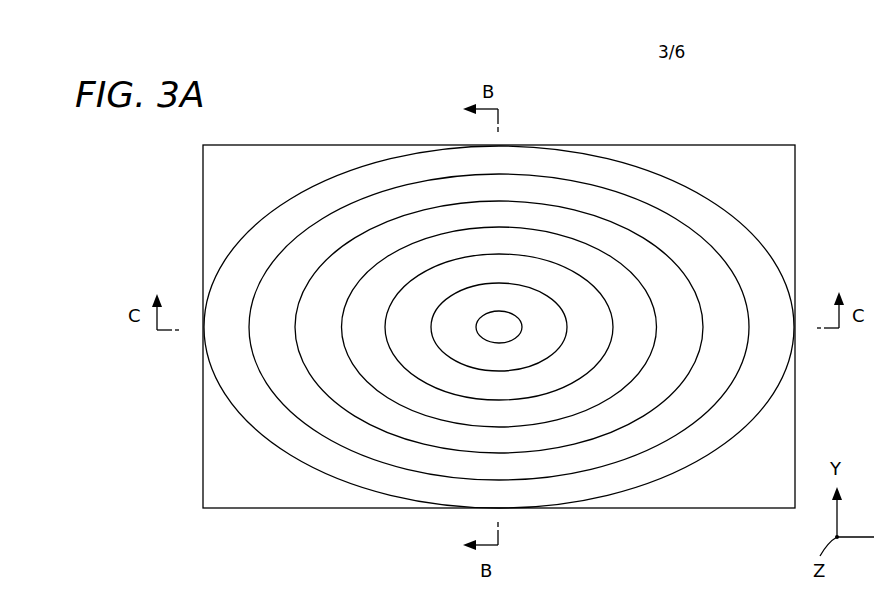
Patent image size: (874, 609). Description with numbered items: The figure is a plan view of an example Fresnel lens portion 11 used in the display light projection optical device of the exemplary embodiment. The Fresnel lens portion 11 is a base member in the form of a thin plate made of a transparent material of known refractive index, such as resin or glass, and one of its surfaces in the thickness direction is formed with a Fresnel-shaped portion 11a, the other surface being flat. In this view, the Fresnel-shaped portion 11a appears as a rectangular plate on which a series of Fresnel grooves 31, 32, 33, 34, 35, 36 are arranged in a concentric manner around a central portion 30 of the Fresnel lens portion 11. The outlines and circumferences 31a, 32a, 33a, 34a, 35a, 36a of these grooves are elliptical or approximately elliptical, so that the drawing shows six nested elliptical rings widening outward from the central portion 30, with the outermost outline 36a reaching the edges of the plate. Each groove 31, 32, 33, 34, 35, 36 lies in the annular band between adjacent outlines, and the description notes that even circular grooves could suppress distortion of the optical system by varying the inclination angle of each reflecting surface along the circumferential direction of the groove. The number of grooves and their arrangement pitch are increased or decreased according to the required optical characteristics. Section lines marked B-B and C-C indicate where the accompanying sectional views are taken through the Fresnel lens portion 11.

The Fresnel lens portion 11 is at (468, 353).
The Fresnel-shaped portion 11a is at (221, 243).
The central portion 30 is at (502, 329).
The Fresnel groove 31 is at (497, 222).
The outline and circumference 31a is at (488, 283).
The Fresnel groove 32 is at (499, 240).
The outline and circumference 32a is at (453, 260).
The Fresnel groove 33 is at (498, 251).
The outline and circumference 33a is at (407, 245).
The Fresnel groove 34 is at (494, 268).
The outline and circumference 34a is at (353, 237).
The Fresnel groove 35 is at (493, 285).
The outline and circumference 35a is at (293, 237).
The Fresnel groove 36 is at (492, 327).
The outline and circumference 36a is at (243, 233).